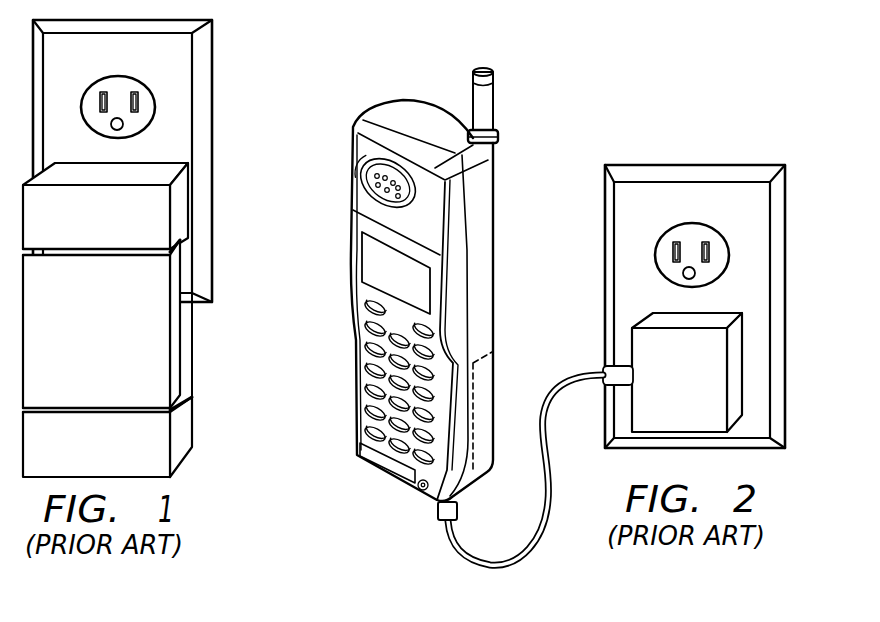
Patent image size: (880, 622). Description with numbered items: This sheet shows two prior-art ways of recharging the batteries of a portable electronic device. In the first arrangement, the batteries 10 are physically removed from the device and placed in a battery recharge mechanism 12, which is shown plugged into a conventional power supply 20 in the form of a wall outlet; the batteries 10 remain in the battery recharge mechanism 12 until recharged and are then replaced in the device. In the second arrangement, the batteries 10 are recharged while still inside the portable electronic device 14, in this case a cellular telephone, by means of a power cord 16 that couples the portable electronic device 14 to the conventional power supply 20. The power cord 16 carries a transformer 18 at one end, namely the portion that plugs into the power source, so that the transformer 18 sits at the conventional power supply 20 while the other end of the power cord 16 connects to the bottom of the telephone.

In FIG. 1, the batteries 10 is at (112, 386).
In FIG. 2, the batteries 10 is at (433, 290).
In FIG. 1, the battery recharge mechanism 12 is at (112, 461).
In FIG. 2, the portable electronic device 14 is at (395, 112).
In FIG. 2, the power cord 16 is at (567, 381).
In FIG. 2, the transformer 18 is at (695, 392).
In FIG. 1, the conventional power supply 20 is at (145, 106).
In FIG. 2, the conventional power supply 20 is at (717, 251).